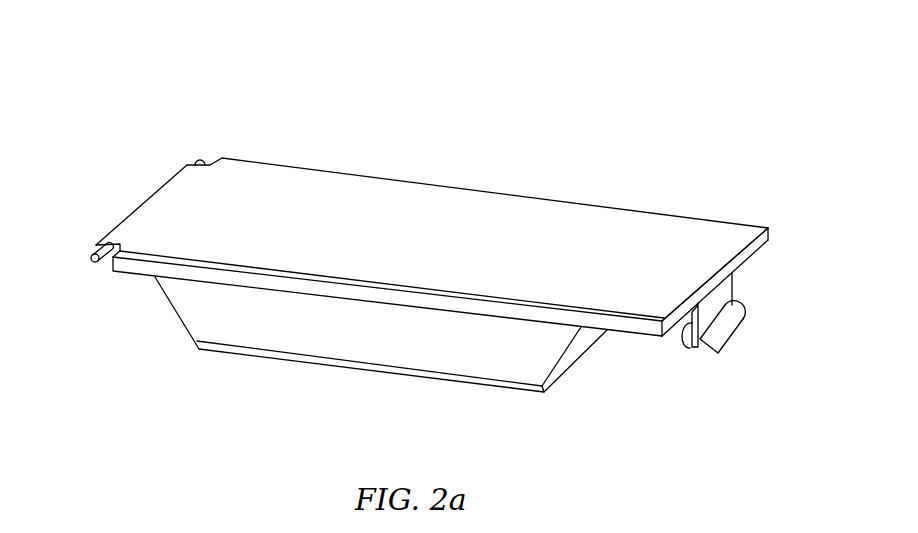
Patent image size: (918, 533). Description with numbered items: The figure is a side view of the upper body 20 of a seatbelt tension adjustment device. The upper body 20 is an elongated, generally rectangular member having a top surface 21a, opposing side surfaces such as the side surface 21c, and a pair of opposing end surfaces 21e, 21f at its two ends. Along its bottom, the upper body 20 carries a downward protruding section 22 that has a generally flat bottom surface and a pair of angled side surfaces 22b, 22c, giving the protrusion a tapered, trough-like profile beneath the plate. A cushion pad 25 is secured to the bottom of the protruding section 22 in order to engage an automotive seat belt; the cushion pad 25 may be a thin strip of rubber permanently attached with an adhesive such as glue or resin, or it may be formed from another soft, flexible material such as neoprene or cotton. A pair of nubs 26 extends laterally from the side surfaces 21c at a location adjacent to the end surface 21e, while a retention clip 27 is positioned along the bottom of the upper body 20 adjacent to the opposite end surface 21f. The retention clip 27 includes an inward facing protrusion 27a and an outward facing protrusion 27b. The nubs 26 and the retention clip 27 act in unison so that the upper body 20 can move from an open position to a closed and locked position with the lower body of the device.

The upper body 20 is at (382, 88).
The top surface 21a is at (448, 243).
The side surface 21c is at (140, 266).
The end surface 21e is at (137, 205).
The end surface 21f is at (770, 247).
The downward protruding section 22 is at (320, 325).
The angled side surface 22b is at (580, 342).
The angled side surface 22c is at (185, 326).
The cushion pad 25 is at (455, 380).
The nubs 26 is at (199, 160).
The retention clip 27 is at (722, 303).
The inward facing protrusion 27a is at (681, 350).
The outward facing protrusion 27b is at (730, 330).